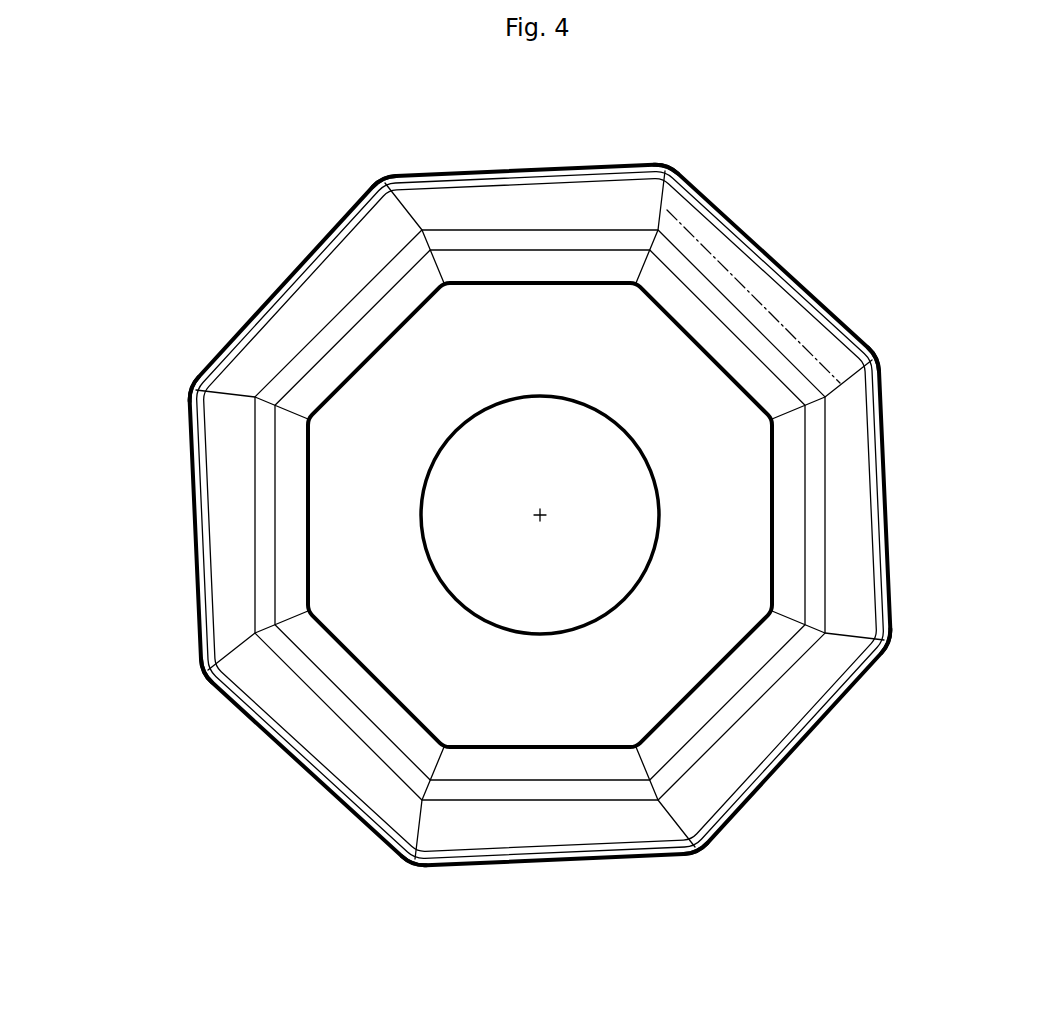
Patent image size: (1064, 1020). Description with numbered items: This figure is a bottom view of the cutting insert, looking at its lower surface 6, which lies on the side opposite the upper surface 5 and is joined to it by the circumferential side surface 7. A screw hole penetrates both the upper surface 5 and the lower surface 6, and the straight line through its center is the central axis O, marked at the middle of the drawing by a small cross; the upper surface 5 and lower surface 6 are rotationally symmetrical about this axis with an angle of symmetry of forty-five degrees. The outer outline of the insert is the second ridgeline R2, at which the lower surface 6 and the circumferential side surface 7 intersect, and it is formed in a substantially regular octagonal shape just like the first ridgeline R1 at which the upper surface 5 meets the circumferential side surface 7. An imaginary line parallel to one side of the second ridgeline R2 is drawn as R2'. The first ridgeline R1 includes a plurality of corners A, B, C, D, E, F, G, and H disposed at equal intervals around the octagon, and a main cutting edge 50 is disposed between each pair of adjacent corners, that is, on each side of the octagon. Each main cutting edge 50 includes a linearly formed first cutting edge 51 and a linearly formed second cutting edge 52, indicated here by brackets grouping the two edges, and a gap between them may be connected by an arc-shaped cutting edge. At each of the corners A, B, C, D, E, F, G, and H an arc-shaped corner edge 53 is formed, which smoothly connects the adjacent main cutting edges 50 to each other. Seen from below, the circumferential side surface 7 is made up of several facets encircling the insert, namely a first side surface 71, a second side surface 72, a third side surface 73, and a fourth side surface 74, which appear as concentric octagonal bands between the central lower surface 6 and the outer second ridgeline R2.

The upper surface 5 is at (730, 827).
The lower surface 6 is at (686, 623).
The circumferential side surface 7 is at (730, 759).
The main cutting edge 50 is at (615, 110).
The first cutting edge 51 is at (486, 167).
The second cutting edge 52 is at (633, 167).
The corner edge 53 is at (380, 181).
The first side surface 71 is at (495, 288).
The second side surface 72 is at (628, 174).
The third side surface 73 is at (540, 242).
The fourth side surface 74 is at (571, 208).
The central axis O is at (545, 512).
The first ridgeline R1 is at (858, 330).
The second ridgeline R2 is at (780, 232).
The imaginary line parallel to one side of the second ridgeline R2' is at (777, 296).
The corner A is at (692, 857).
The corner B is at (885, 645).
The corner C is at (878, 362).
The corner D is at (676, 181).
The corner E is at (393, 177).
The corner F is at (193, 380).
The corner G is at (203, 672).
The corner H is at (408, 863).